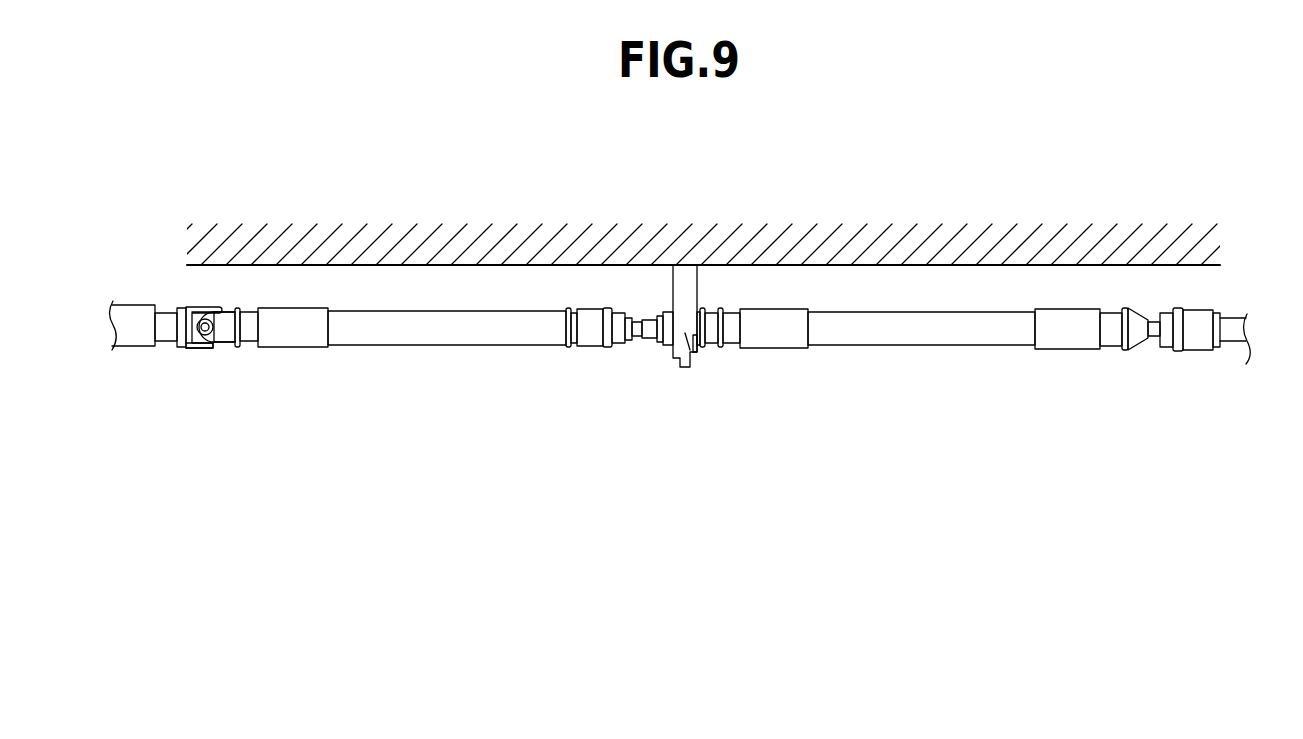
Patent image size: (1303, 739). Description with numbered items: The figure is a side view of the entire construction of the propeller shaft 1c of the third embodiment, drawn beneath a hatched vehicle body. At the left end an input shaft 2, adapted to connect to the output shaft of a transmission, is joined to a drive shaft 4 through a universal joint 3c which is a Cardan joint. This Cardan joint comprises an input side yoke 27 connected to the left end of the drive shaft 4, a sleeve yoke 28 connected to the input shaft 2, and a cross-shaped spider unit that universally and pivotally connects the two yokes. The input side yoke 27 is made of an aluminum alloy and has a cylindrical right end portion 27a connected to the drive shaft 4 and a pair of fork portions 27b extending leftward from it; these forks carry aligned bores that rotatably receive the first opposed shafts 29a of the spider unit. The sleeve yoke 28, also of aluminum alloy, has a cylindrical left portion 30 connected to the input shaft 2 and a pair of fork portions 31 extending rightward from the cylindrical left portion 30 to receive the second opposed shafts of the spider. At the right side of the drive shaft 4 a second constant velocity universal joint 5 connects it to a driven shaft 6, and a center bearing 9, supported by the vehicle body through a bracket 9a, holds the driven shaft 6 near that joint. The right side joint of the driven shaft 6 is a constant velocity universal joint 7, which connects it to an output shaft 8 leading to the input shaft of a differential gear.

The propeller shaft 1c is at (517, 413).
The input shaft 2 is at (140, 352).
The universal joint 3c is at (190, 357).
The drive shaft 4 is at (440, 346).
The second constant velocity universal joint 5 is at (593, 350).
The driven shaft 6 is at (903, 346).
The constant velocity universal joint 7 is at (1185, 356).
The output shaft 8 is at (1233, 343).
The center bearing 9 is at (686, 373).
The bracket 9a is at (692, 353).
The input side yoke 27 is at (223, 301).
The cylindrical right end portion 27a is at (233, 348).
The fork portions 27b is at (218, 344).
The sleeve yoke 28 is at (187, 301).
The first opposed shafts 29a is at (207, 336).
The cylindrical left portion 30 is at (168, 315).
The fork portions 31 is at (205, 307).